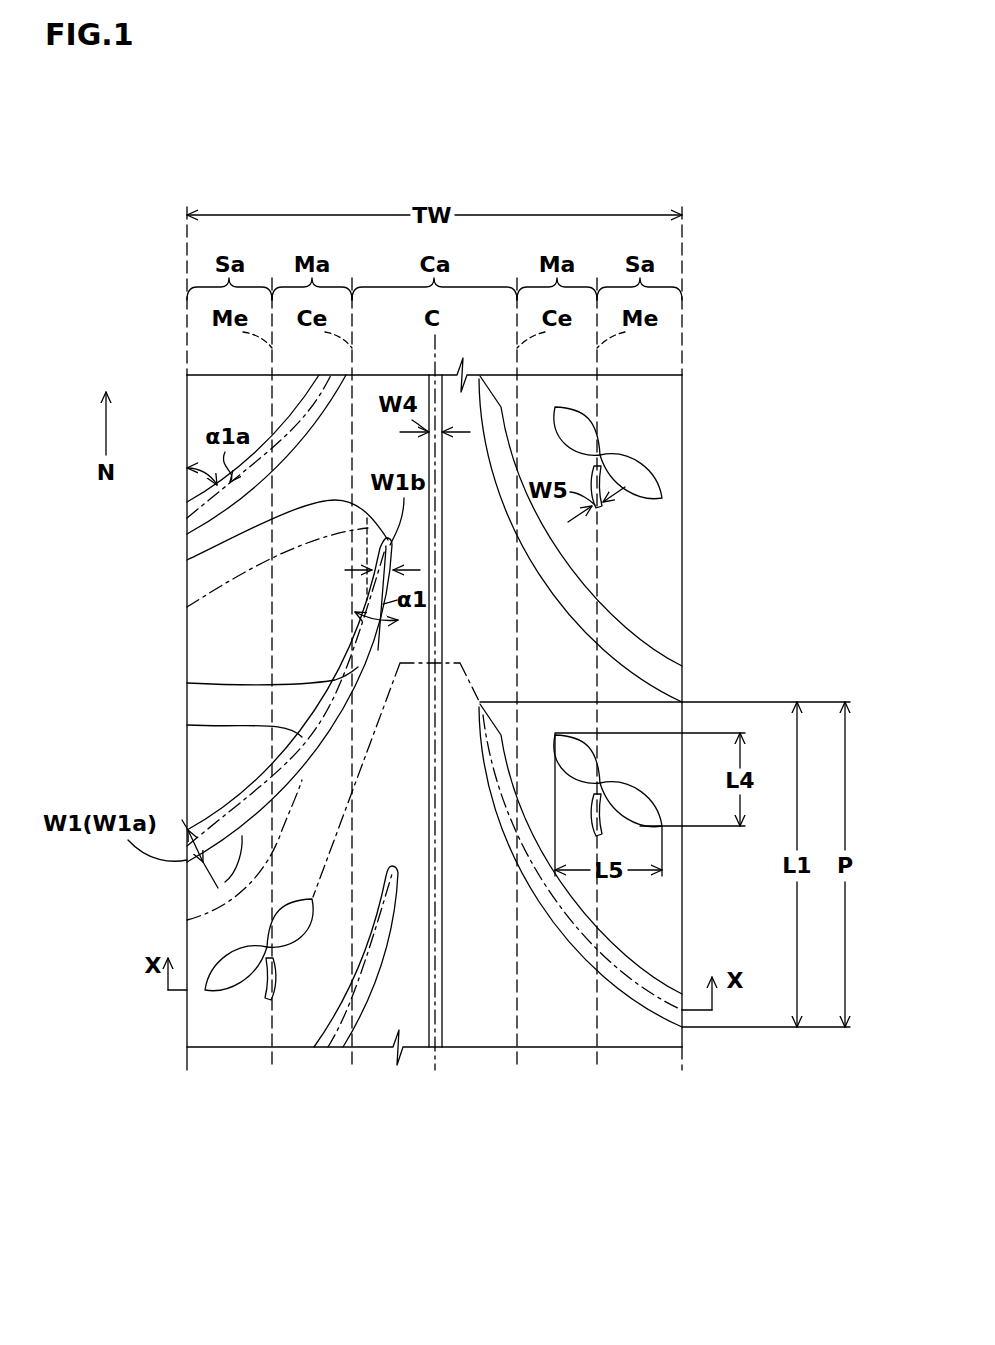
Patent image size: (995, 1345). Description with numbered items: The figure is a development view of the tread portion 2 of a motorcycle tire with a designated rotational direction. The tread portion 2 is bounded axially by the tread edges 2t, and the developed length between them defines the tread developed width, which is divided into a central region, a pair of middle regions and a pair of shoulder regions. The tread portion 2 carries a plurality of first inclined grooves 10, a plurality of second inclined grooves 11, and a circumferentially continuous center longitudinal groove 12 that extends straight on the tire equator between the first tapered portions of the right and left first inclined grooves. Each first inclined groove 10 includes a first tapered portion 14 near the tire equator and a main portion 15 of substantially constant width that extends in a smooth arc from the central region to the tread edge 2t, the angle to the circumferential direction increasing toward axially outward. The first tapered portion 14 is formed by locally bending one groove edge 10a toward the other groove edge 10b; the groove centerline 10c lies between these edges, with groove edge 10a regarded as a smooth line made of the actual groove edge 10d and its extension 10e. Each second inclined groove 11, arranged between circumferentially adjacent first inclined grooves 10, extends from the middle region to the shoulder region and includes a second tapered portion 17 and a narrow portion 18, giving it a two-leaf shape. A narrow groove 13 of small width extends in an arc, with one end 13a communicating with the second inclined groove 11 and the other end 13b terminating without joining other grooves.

The tread portion 2 is at (743, 275).
The tread edge 2t is at (187, 395).
The first inclined groove 10 is at (262, 797).
The groove edge 10a is at (187, 725).
The groove edge 10b is at (225, 882).
The groove centerline 10c is at (187, 920).
The actual groove edge 10d is at (187, 683).
The extension 10e is at (187, 607).
The second inclined groove 11 is at (778, 450).
The center longitudinal groove 12 is at (437, 385).
The narrow groove 13 is at (600, 507).
The one end 13a is at (255, 978).
The other end 13b is at (268, 1000).
The first tapered portion 14 is at (248, 536).
The main portion 15 is at (580, 618).
The second tapered portion 17 is at (607, 455).
The narrow portion 18 is at (640, 475).